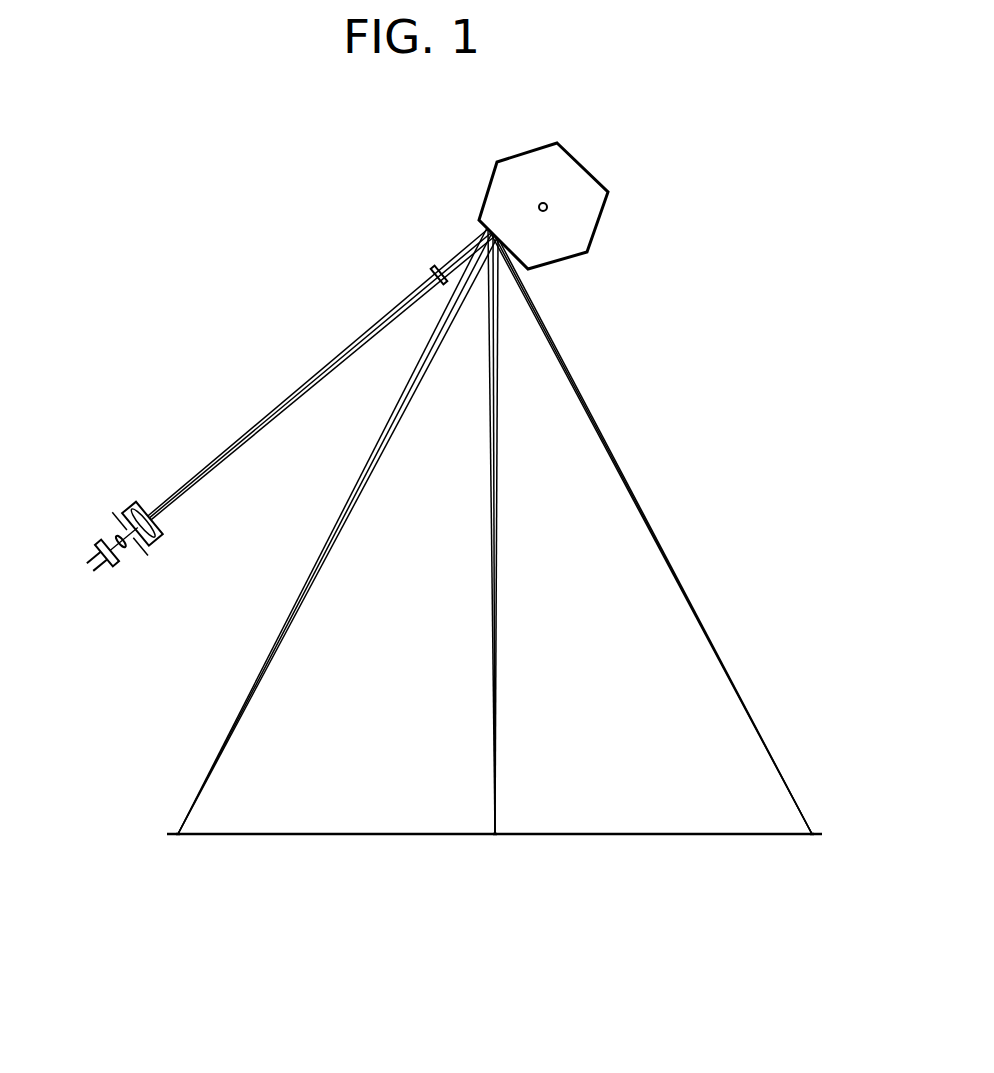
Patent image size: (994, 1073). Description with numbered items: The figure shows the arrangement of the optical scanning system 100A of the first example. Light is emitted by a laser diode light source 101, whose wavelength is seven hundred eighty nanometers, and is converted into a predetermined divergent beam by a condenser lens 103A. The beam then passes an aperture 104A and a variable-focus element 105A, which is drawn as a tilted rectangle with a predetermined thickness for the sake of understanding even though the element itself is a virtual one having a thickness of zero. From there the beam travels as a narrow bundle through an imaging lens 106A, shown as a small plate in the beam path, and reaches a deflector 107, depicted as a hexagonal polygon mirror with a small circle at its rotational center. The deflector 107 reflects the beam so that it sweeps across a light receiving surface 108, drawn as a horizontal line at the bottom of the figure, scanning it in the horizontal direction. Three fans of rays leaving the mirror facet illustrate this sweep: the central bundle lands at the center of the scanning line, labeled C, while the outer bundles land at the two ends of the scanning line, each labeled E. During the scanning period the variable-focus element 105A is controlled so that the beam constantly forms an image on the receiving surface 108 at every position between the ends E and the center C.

The optical scanning system 100A is at (785, 170).
The laser diode light source 101 is at (107, 562).
The condenser lens 103A is at (117, 538).
The aperture 104A is at (140, 553).
The variable-focus element 105A is at (126, 502).
The imaging lens 106A is at (432, 266).
The deflector 107 is at (583, 220).
The light receiving surface 108 is at (642, 836).
The scanning line ends E is at (178, 836).
The scanning line center C is at (495, 836).